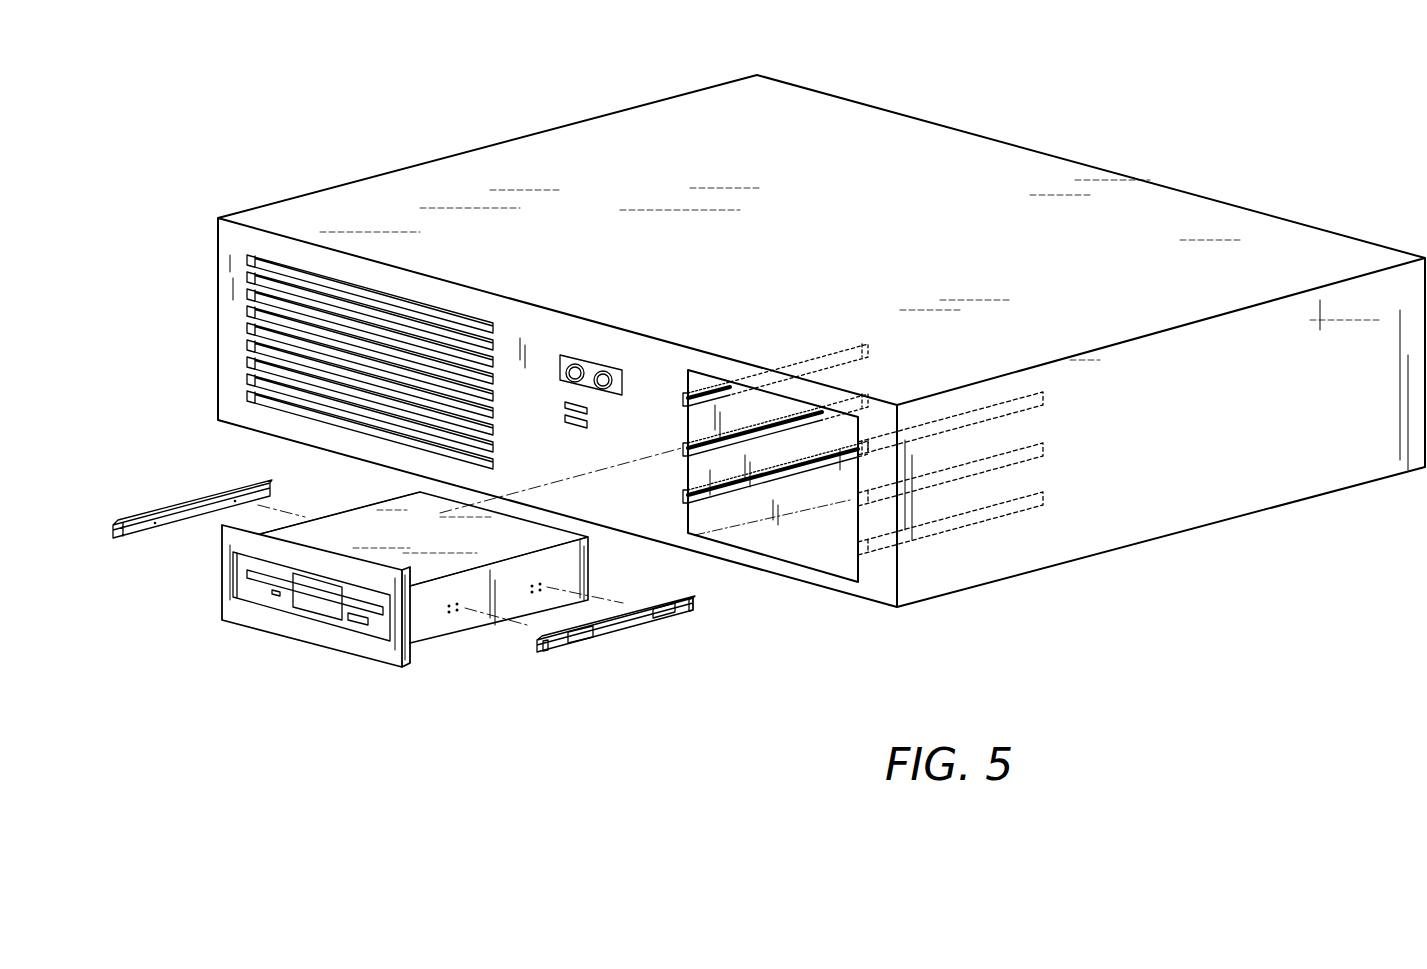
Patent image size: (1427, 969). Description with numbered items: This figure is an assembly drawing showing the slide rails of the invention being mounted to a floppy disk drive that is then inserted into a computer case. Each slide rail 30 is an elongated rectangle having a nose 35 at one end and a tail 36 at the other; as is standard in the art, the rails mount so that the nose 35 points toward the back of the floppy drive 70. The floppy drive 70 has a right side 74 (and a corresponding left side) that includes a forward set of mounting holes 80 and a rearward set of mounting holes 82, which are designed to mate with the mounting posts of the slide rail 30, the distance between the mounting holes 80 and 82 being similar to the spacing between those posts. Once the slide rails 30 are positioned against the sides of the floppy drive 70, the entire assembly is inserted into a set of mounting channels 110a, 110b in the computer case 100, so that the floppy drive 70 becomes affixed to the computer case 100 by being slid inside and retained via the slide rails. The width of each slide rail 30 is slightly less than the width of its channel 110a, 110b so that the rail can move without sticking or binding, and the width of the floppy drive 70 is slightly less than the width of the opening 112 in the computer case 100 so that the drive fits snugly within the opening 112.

The slide rail 30 is at (198, 489).
The nose 35 is at (696, 630).
The tail 36 is at (543, 671).
The floppy drive 70 is at (402, 684).
The right side 74 is at (372, 500).
The forward set of mounting holes 80 is at (450, 631).
The rearward set of mounting holes 82 is at (548, 578).
The computer case 100 is at (1168, 614).
The mounting channel 110a is at (690, 443).
The mounting channel 110b is at (1045, 440).
The opening 112 is at (788, 545).